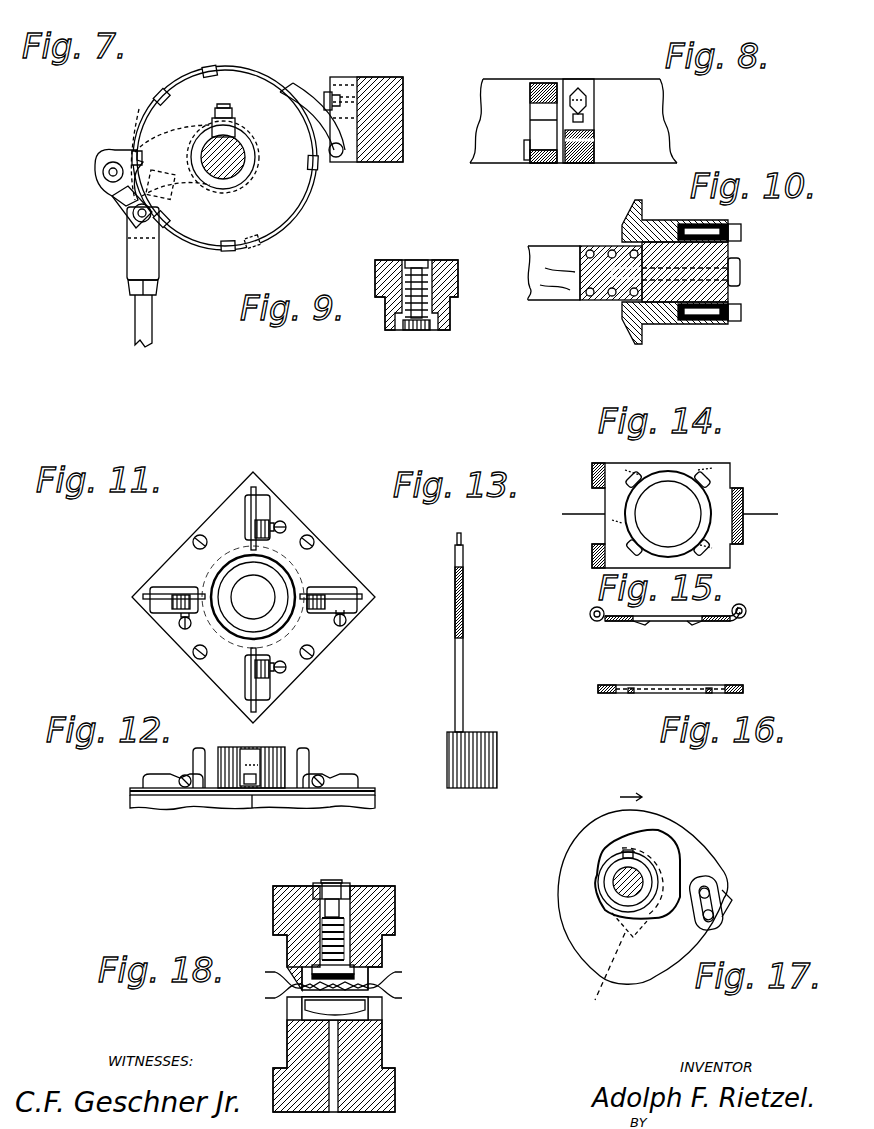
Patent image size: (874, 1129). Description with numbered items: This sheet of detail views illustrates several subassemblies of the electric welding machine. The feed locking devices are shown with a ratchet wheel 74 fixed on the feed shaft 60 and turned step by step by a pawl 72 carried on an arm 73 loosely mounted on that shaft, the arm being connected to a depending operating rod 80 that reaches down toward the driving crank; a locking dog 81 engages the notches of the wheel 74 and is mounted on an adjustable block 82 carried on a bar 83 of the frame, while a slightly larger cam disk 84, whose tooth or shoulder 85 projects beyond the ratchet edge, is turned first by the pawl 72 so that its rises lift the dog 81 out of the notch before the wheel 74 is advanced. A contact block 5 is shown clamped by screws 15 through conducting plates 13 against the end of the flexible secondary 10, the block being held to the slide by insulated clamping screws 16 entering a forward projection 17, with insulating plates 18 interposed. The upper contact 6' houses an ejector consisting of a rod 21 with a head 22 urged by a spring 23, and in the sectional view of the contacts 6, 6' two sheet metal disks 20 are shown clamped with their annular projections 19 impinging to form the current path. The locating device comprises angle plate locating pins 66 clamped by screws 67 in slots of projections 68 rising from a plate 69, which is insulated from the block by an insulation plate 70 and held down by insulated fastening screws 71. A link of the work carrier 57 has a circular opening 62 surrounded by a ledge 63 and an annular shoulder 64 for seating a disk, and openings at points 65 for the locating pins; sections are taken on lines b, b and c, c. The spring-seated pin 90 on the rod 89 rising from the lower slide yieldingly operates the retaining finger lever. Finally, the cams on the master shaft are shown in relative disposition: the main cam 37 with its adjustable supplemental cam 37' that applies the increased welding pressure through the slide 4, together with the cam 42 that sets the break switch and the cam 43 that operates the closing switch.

In FIG. 10, the pressure slide 4 is at (630, 335).
In FIG. 13, the pressure slide 4 is at (497, 757).
In FIG. 10, the contact block for the lower slide 5 is at (728, 298).
In FIG. 12, the contact block for the lower slide 5 is at (360, 806).
In FIG. 11, the lower contact 6 is at (282, 581).
In FIG. 12, the lower contact 6 is at (251, 753).
In FIG. 18, the lower contact 6 is at (357, 1054).
In FIG. 9, the upper contact 6' is at (395, 287).
In FIG. 18, the upper contact 6' is at (357, 938).
In FIG. 10, the flexible secondary 10 is at (547, 252).
In FIG. 10, the plates of good conducting material 13 is at (604, 248).
In FIG. 10, the bolts or screws 15 is at (740, 268).
In FIG. 10, the clamping screws 16 is at (742, 313).
In FIG. 10, the forward projection 17 is at (658, 222).
In FIG. 10, the plates of insulating material 18 is at (688, 320).
In FIG. 18, the projections 19 is at (305, 1010).
In FIG. 18, the sheet metal disks 20 is at (396, 978).
In FIG. 9, the rod 21 is at (420, 262).
In FIG. 18, the rod 21 is at (336, 907).
In FIG. 9, the head 22 is at (405, 328).
In FIG. 18, the head 22 is at (325, 972).
In FIG. 18, the spring 23 is at (320, 920).
In FIG. 17, the cam 37 is at (643, 913).
In FIG. 17, the supplemental cam 37' is at (734, 903).
In FIG. 17, the cam 42 is at (617, 938).
In FIG. 17, the cam 43 is at (656, 848).
In FIG. 14, the work carrier 57 is at (652, 473).
In FIG. 15, the work carrier 57 is at (736, 621).
In FIG. 16, the work carrier 57 is at (670, 689).
In FIG. 7, the shaft 60 is at (227, 167).
In FIG. 14, the circular opening 62 is at (668, 514).
In FIG. 14, the ledge 63 is at (706, 510).
In FIG. 16, the ledge 63 is at (710, 688).
In FIG. 14, the annular shoulder 64 is at (708, 494).
In FIG. 15, the annular shoulder 64 is at (648, 623).
In FIG. 16, the annular shoulder 64 is at (633, 688).
In FIG. 14, the openings 65 is at (632, 545).
In FIG. 11, the locating pins 66 is at (145, 597).
In FIG. 12, the locating pins 66 is at (192, 755).
In FIG. 11, the screw 67 is at (284, 523).
In FIG. 12, the screw 67 is at (182, 779).
In FIG. 11, the projection 68 is at (165, 605).
In FIG. 12, the projection 68 is at (165, 777).
In FIG. 11, the plate 69 is at (318, 656).
In FIG. 12, the plate 69 is at (130, 792).
In FIG. 12, the plate of insulation 70 is at (376, 793).
In FIG. 11, the fastening screws 71 is at (195, 546).
In FIG. 7, the pawl 72 is at (118, 185).
In FIG. 7, the arm 73 is at (110, 150).
In FIG. 7, the ratchet wheel 74 is at (210, 70).
In FIG. 7, the rod 80 is at (128, 232).
In FIG. 7, the locking dog 81 is at (298, 90).
In FIG. 8, the locking dog 81 is at (531, 116).
In FIG. 7, the adjustable block 82 is at (348, 78).
In FIG. 8, the adjustable block 82 is at (590, 121).
In FIG. 7, the bar 83 is at (403, 104).
In FIG. 8, the bar 83 is at (652, 143).
In FIG. 7, the cam disk 84 is at (245, 64).
In FIG. 7, the tooth or shoulder 85 is at (134, 138).
In FIG. 13, the pin or rod 89 is at (463, 689).
In FIG. 13, the spring seated pin 90 is at (461, 560).
In FIG. 14, the section line b b is at (676, 515).
In FIG. 14, the section line c c is at (612, 462).